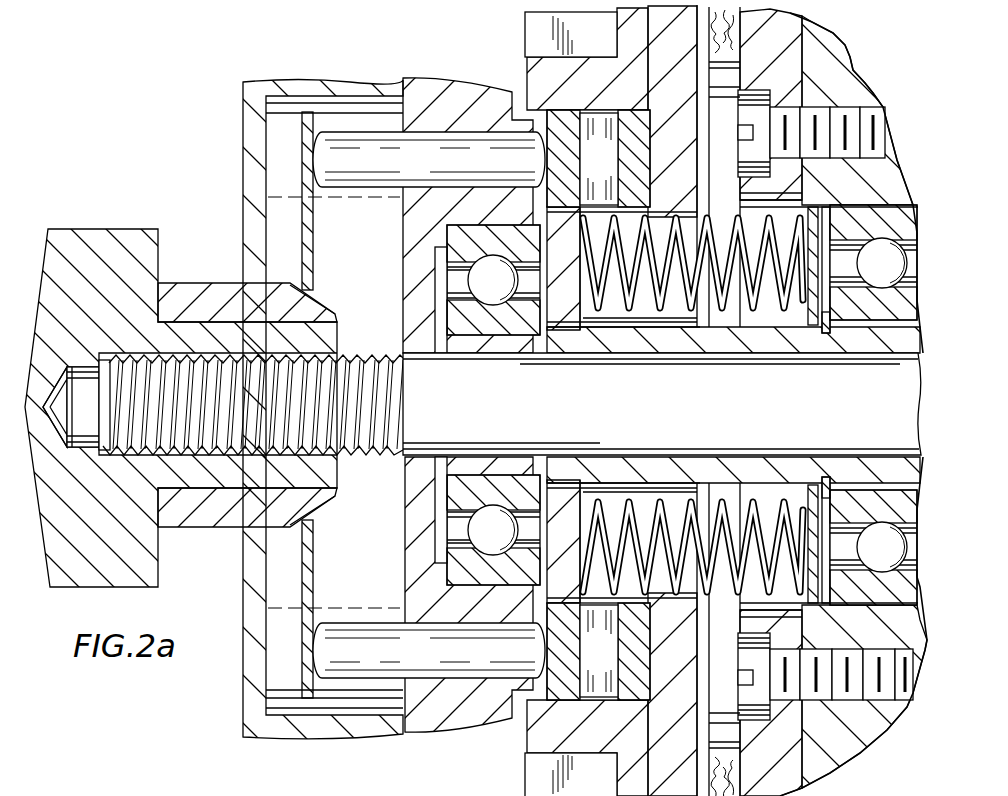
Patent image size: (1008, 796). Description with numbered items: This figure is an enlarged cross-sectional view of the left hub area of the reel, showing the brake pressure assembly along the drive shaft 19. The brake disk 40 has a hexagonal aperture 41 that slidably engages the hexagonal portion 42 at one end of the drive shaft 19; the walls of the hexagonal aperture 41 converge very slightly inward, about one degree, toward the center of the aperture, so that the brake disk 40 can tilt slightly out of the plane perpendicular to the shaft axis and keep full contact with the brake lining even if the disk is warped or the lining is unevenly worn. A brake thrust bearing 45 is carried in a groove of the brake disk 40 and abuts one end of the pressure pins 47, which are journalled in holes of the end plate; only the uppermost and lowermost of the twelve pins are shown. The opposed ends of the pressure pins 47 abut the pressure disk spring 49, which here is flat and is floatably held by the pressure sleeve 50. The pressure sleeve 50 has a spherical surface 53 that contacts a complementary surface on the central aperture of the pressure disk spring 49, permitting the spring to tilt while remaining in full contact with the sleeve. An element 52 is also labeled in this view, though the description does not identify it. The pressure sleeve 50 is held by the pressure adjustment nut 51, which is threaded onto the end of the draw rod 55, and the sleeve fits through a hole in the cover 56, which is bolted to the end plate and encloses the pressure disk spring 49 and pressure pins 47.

The drive shaft 19 is at (561, 343).
The brake disk 40 is at (580, 266).
The hexagonal aperture 41 is at (579, 328).
The hexagonal portion 42 is at (713, 322).
The brake thrust bearing 45 is at (613, 172).
The pressure pins 47 is at (458, 172).
The pressure disk spring 49 is at (315, 247).
The pressure sleeve 50 is at (222, 283).
The pressure adjustment nut 51 is at (110, 203).
The piston disk 52 is at (628, 320).
The spherical surface 53 is at (330, 312).
The draw rod 55 is at (446, 416).
The cover 56 is at (243, 130).